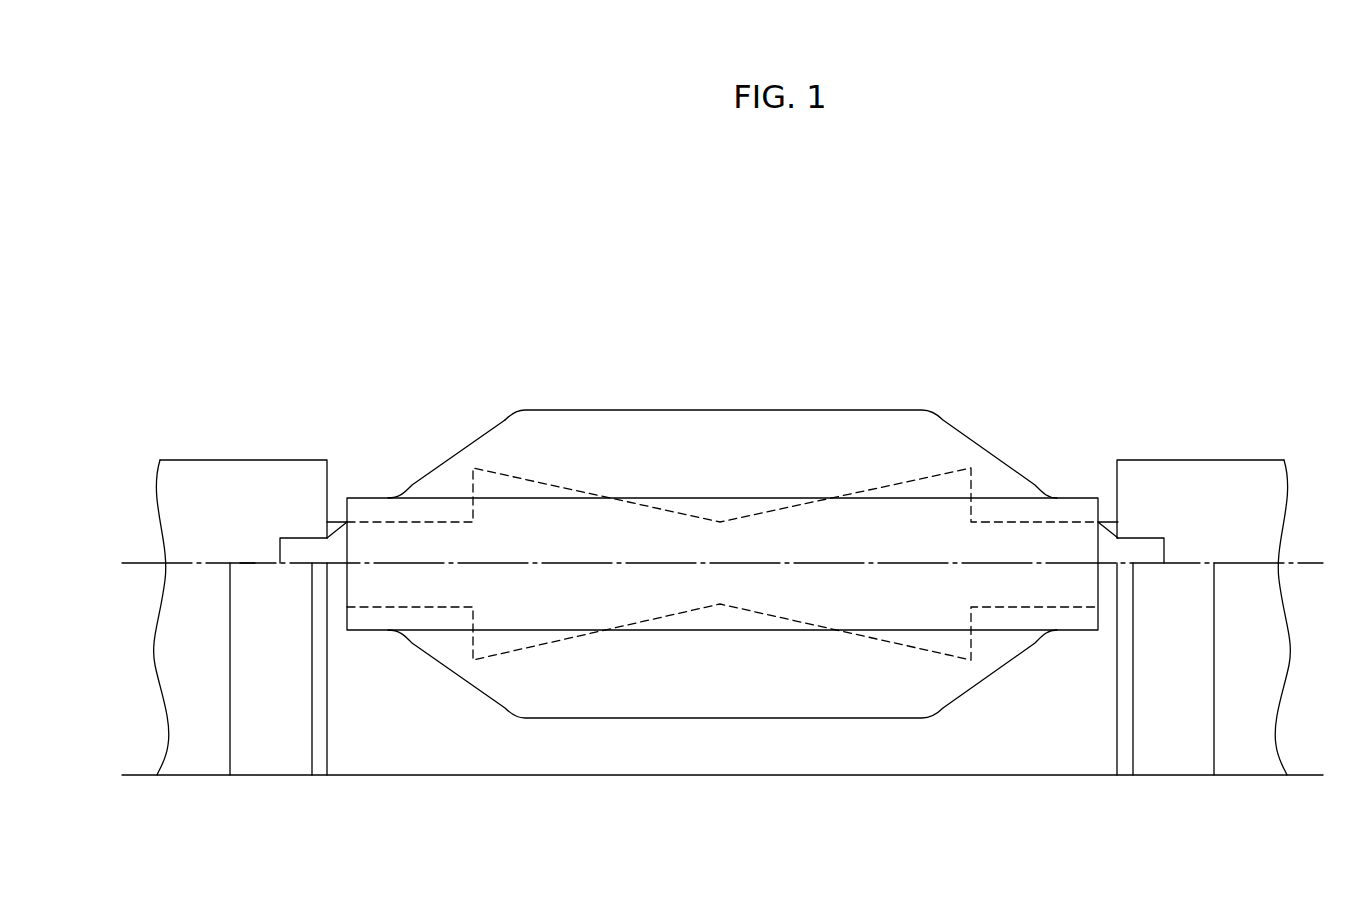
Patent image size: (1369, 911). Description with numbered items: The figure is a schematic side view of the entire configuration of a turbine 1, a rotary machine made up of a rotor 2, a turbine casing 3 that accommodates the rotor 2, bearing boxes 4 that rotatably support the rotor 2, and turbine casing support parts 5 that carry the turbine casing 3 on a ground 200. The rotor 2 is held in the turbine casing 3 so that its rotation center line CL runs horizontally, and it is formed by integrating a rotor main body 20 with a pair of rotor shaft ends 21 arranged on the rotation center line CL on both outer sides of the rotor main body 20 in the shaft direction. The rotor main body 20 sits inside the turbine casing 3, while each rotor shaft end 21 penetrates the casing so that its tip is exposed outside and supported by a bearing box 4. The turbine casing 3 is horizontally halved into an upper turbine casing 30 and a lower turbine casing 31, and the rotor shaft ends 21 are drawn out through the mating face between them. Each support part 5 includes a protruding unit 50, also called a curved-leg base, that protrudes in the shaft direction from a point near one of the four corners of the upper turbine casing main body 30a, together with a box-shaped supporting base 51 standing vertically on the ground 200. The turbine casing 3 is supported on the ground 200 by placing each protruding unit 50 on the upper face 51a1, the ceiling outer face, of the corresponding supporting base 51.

The turbine 1 is at (916, 332).
The rotor 2 is at (853, 488).
The rotor main body 20 is at (975, 470).
The rotor shaft ends 21 is at (331, 520).
The turbine casing 3 is at (722, 538).
The upper turbine casing 30 is at (722, 415).
The upper turbine casing main body 30a is at (455, 453).
The lower turbine casing 31 is at (456, 676).
The bearing box 4 is at (190, 460).
The turbine casing support part 5 is at (722, 564).
The protruding unit 50 is at (297, 538).
The supporting base 51 is at (262, 563).
The upper face 51a1 is at (247, 563).
The ground 200 is at (1020, 775).
The rotation center line CL is at (1302, 562).